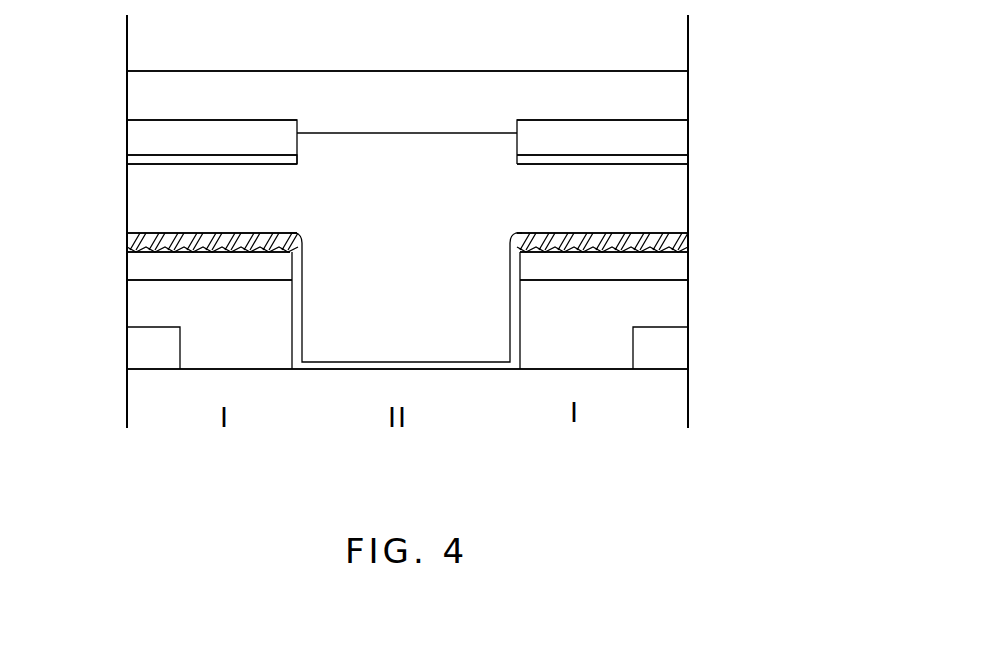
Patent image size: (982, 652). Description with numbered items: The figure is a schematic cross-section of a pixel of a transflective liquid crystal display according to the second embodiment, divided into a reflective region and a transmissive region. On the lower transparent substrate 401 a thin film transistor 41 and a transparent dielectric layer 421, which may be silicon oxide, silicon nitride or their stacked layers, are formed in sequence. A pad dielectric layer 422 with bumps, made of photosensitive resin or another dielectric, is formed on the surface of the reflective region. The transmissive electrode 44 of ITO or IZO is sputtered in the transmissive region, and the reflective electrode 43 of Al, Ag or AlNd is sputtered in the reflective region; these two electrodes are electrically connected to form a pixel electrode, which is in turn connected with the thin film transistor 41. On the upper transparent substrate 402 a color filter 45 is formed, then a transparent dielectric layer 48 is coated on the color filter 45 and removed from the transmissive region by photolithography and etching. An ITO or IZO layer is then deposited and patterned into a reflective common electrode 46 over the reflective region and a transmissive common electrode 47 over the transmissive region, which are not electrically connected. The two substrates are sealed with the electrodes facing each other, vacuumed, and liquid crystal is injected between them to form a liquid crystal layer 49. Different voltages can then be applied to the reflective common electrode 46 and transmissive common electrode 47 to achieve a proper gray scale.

The transparent substrate 401 is at (407, 390).
The transparent substrate 402 is at (407, 53).
The thin film transistor 41 is at (658, 350).
The transparent dielectric layer 421 is at (670, 305).
The pad dielectric layer 422 is at (670, 267).
The reflective electrode 43 is at (690, 238).
The transmissive electrode 44 is at (516, 280).
The color filter 45 is at (670, 95).
The reflective common electrode 46 is at (668, 160).
The transmissive common electrode 47 is at (390, 135).
The transparent dielectric layer 48 is at (668, 137).
The liquid crystal layer 49 is at (668, 186).